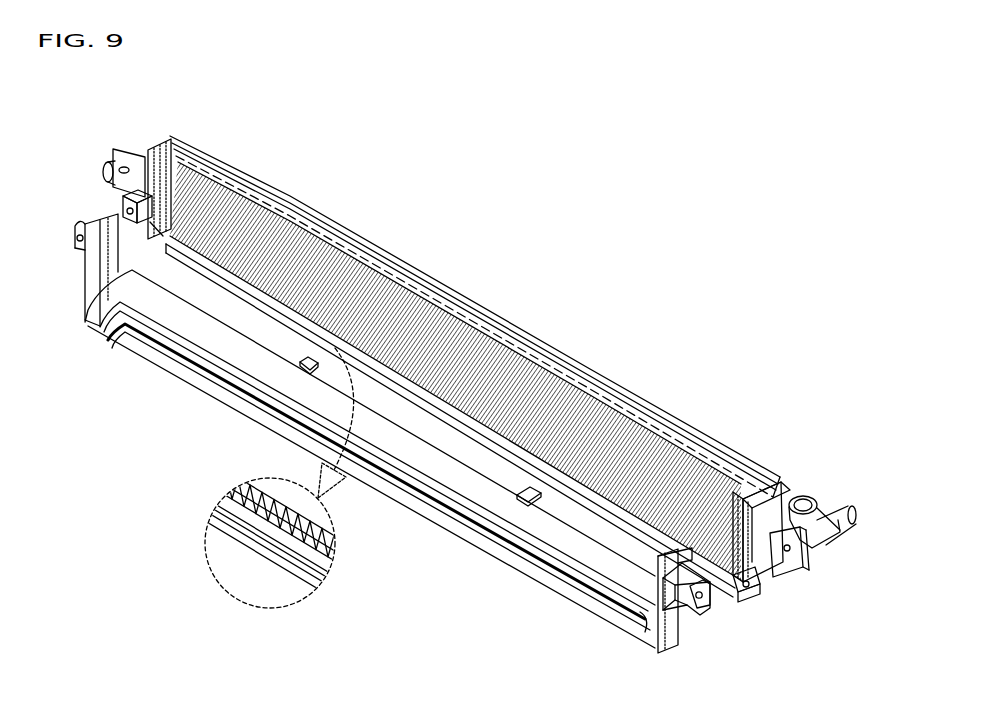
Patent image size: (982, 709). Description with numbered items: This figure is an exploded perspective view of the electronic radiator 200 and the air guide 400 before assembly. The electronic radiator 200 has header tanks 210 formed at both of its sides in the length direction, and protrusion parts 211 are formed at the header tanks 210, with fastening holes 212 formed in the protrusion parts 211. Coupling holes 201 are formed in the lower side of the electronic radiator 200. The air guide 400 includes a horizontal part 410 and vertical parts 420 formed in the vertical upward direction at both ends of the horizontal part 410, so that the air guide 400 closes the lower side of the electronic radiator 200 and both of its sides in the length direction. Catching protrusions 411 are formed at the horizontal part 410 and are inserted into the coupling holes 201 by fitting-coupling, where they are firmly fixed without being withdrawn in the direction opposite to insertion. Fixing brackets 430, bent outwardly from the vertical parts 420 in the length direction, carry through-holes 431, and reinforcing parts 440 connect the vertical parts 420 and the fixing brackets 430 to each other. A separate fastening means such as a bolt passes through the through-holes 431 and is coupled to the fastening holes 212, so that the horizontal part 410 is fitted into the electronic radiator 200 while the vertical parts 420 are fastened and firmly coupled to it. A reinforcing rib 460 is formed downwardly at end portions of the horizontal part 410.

The electronic radiator 200 is at (488, 308).
The coupling holes 201 is at (573, 413).
The header tanks 210 is at (172, 139).
The protrusion parts 211 is at (783, 580).
The fastening holes 212 is at (745, 584).
The air guide 400 is at (370, 459).
The horizontal part 410 is at (550, 540).
The catching protrusions 411 is at (300, 370).
The vertical parts 420 is at (115, 310).
The fixing brackets 430 is at (715, 603).
The through-holes 431 is at (702, 600).
The reinforcing parts 440 is at (724, 614).
The reinforcing rib 460 is at (554, 594).